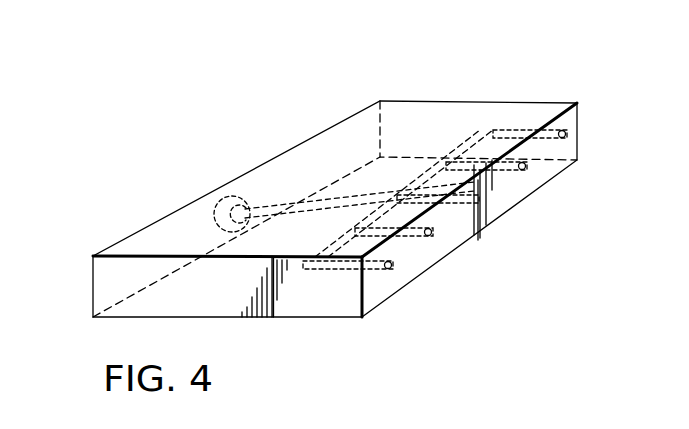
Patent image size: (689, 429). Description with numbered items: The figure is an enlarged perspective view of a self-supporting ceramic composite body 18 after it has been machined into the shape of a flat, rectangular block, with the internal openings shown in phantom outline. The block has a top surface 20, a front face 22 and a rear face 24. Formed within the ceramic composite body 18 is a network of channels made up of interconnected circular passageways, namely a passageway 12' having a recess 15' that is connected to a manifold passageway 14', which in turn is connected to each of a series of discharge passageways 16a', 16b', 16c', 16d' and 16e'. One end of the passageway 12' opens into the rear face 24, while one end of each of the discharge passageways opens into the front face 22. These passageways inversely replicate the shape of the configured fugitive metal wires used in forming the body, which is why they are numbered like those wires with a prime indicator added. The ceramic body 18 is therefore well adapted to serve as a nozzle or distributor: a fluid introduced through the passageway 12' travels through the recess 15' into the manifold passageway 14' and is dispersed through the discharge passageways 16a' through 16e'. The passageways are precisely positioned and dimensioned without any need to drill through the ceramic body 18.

The ceramic composite body 18 is at (338, 147).
The top surface 20 is at (452, 123).
The rear face 24 is at (223, 186).
The recess 15' is at (184, 206).
The circular passageway 12' is at (359, 193).
The manifold passageway 14' is at (404, 155).
The discharge passageway 16a' is at (348, 311).
The discharge passageway 16b' is at (412, 276).
The discharge passageway 16c' is at (458, 235).
The discharge passageway 16d' is at (529, 182).
The discharge passageway 16e' is at (565, 135).
The front face 22 is at (498, 185).